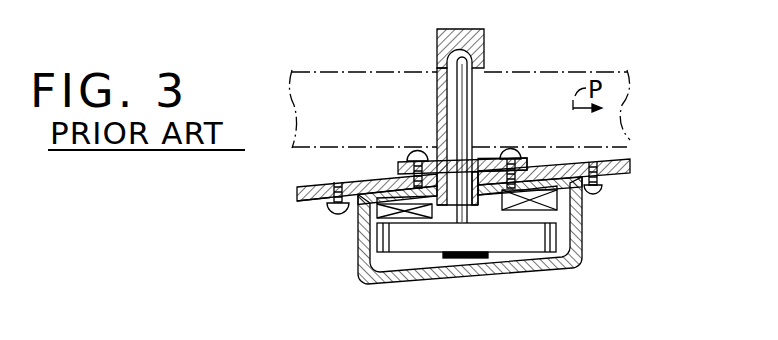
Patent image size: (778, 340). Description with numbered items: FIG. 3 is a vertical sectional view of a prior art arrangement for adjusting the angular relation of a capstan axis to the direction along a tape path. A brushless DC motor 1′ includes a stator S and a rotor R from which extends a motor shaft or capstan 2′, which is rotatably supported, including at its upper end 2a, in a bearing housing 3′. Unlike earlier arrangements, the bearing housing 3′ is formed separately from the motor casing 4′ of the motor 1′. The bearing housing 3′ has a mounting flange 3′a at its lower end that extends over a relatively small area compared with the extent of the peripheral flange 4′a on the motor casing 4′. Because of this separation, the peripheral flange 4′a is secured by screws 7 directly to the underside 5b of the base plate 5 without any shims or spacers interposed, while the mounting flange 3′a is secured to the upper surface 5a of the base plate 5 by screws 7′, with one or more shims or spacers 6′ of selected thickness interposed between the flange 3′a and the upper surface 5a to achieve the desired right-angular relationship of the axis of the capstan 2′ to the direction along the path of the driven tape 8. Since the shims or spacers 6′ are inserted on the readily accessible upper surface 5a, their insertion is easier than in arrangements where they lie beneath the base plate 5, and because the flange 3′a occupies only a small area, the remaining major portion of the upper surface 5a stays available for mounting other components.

The motor 1′ is at (356, 273).
The motor shaft or capstan 2′ is at (470, 110).
The upper end of motor shaft 2a is at (466, 34).
The bearing housing 3′ is at (437, 44).
The mounting flange 3′a is at (525, 163).
The motor casing 4′ is at (482, 268).
The peripheral flange 4′a is at (328, 206).
The base plate 5 is at (624, 171).
The upper surface of base plate 5a is at (300, 188).
The underside of base plate 5b is at (306, 202).
The shims or spacers 6′ is at (398, 172).
The screws 7 is at (340, 216).
The screws 7′ is at (417, 150).
The tape 8 is at (577, 72).
The rotor R is at (418, 250).
The stator S is at (545, 205).